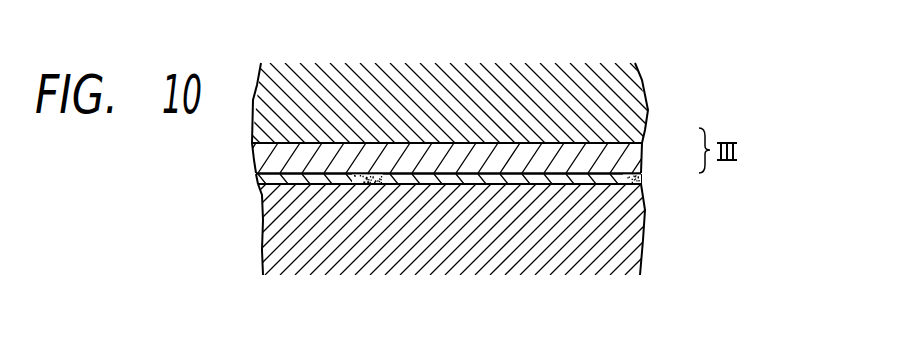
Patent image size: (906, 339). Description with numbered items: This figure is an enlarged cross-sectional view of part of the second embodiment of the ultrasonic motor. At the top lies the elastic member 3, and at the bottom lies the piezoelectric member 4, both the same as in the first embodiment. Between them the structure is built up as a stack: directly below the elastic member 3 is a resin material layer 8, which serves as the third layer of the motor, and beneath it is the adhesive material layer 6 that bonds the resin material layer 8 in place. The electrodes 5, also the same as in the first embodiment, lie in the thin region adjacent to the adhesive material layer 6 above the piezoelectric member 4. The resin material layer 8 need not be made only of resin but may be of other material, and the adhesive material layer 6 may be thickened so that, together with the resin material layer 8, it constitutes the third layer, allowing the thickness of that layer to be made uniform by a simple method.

The elastic member 3 is at (640, 96).
The piezoelectric member 4 is at (613, 230).
The electrodes 5 is at (292, 186).
The adhesive material layer 6 is at (642, 170).
The resin material layer 8 is at (252, 157).